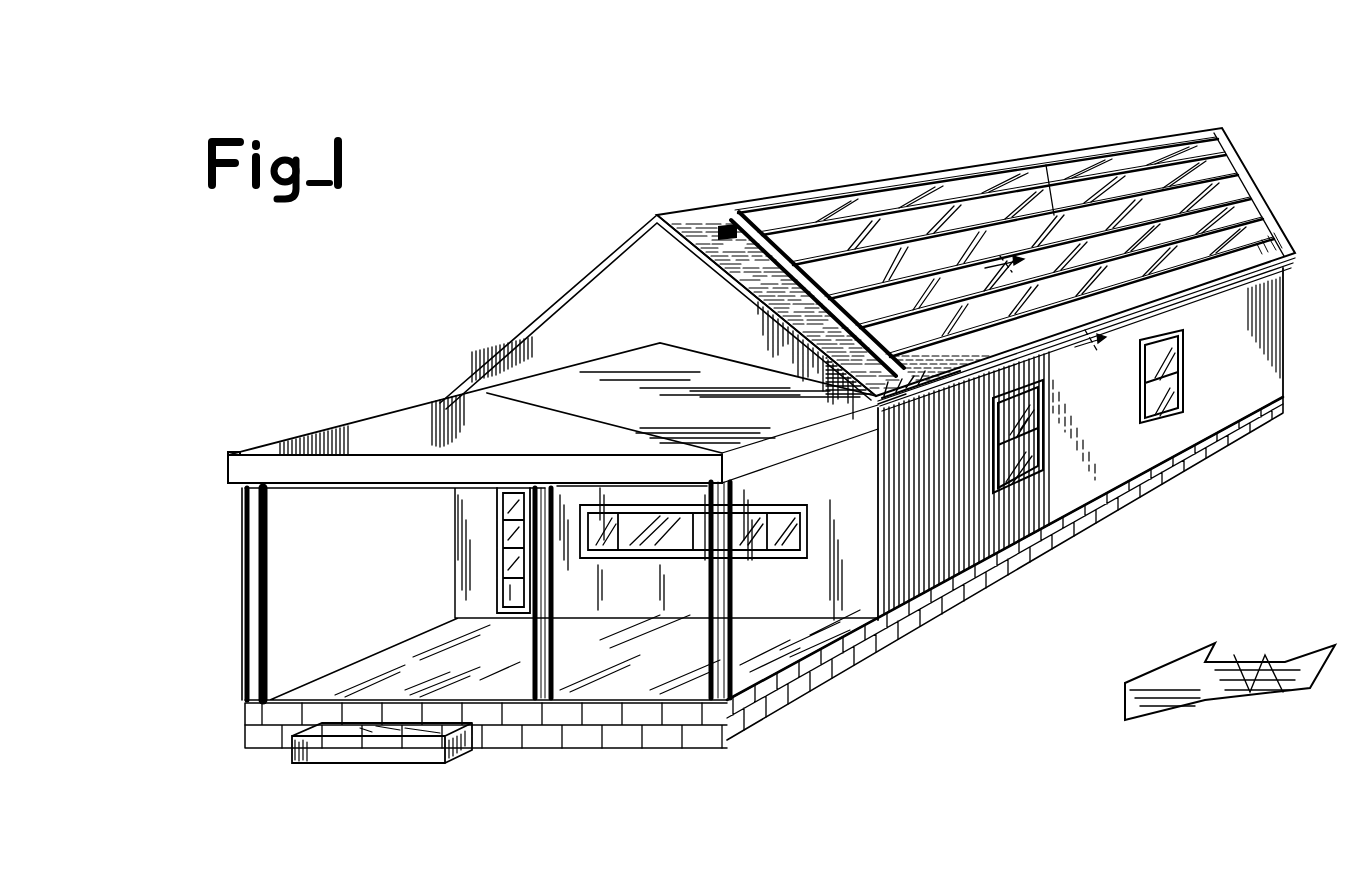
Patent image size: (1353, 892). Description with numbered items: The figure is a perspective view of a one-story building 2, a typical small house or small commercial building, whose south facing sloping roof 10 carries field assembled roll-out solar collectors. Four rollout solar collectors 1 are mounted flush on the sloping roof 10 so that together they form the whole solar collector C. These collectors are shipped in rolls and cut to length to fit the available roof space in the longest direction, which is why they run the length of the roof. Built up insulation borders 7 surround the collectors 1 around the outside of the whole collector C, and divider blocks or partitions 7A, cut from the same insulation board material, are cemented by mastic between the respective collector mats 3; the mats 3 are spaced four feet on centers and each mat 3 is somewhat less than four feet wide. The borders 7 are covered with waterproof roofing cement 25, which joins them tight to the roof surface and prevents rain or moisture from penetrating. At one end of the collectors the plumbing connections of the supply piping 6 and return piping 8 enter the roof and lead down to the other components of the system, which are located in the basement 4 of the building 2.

The rollout solar collector 1 is at (1160, 190).
The building 2 is at (1278, 350).
The collector mat 3 is at (1034, 314).
The basement 4 is at (1260, 200).
The supply piping 6 is at (924, 398).
The insulation border 7 is at (981, 180).
The divider block 7A is at (1050, 232).
The return piping 8 is at (950, 378).
The sloping roof 10 is at (1262, 236).
The waterproof roofing cement 25 is at (718, 228).
The solar collector C is at (898, 205).